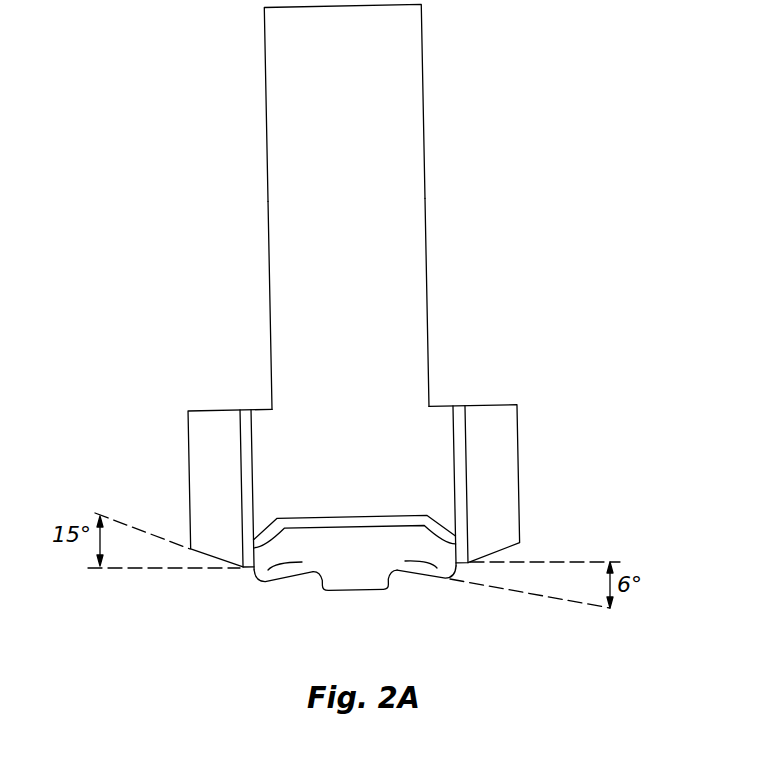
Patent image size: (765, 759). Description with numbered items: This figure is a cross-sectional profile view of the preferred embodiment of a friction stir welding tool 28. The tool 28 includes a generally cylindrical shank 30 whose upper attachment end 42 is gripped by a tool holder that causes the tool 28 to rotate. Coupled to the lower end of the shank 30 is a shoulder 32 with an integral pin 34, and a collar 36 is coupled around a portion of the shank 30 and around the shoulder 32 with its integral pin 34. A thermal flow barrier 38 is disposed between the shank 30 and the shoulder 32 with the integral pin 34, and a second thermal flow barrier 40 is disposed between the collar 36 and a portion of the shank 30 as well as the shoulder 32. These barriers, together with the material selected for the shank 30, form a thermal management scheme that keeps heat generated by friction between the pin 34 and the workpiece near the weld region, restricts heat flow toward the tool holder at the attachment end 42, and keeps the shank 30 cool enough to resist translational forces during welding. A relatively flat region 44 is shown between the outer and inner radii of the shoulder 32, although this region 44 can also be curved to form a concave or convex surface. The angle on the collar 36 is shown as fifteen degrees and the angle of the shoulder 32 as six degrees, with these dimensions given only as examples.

The tool 28 is at (534, 245).
The shank 30 is at (405, 342).
The shoulder 32 is at (315, 592).
The pin 34 is at (392, 603).
The collar 36 is at (498, 460).
The thermal flow barrier 38 is at (333, 521).
The thermal flow barrier 40 is at (243, 492).
The attachment end 42 is at (422, 65).
The relatively flat region 44 is at (355, 552).